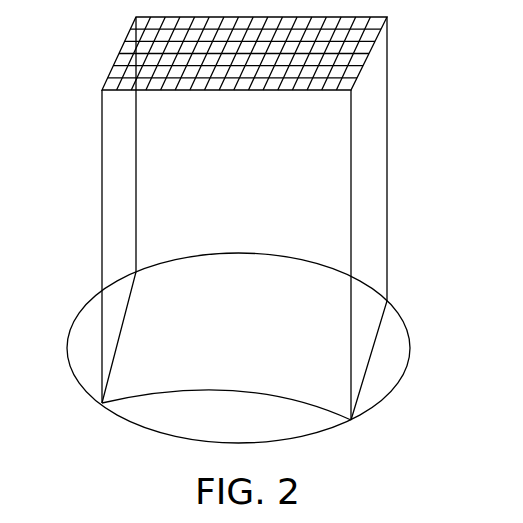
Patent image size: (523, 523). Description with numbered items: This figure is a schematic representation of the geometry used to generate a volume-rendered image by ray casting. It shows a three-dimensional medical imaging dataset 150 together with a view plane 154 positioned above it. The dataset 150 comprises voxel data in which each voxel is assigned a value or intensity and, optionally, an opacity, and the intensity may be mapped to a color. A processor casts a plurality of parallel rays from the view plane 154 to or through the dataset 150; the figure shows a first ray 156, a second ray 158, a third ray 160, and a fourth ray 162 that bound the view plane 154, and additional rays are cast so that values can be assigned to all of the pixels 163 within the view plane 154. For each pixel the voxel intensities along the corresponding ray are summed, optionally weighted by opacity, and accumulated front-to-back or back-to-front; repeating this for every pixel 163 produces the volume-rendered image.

The 3D medical imaging dataset 150 is at (392, 363).
The view plane 154 is at (376, 54).
The first ray 156 is at (137, 160).
The second ray 158 is at (102, 208).
The third ray 160 is at (387, 158).
The fourth ray 162 is at (351, 198).
The pixels 163 is at (165, 17).